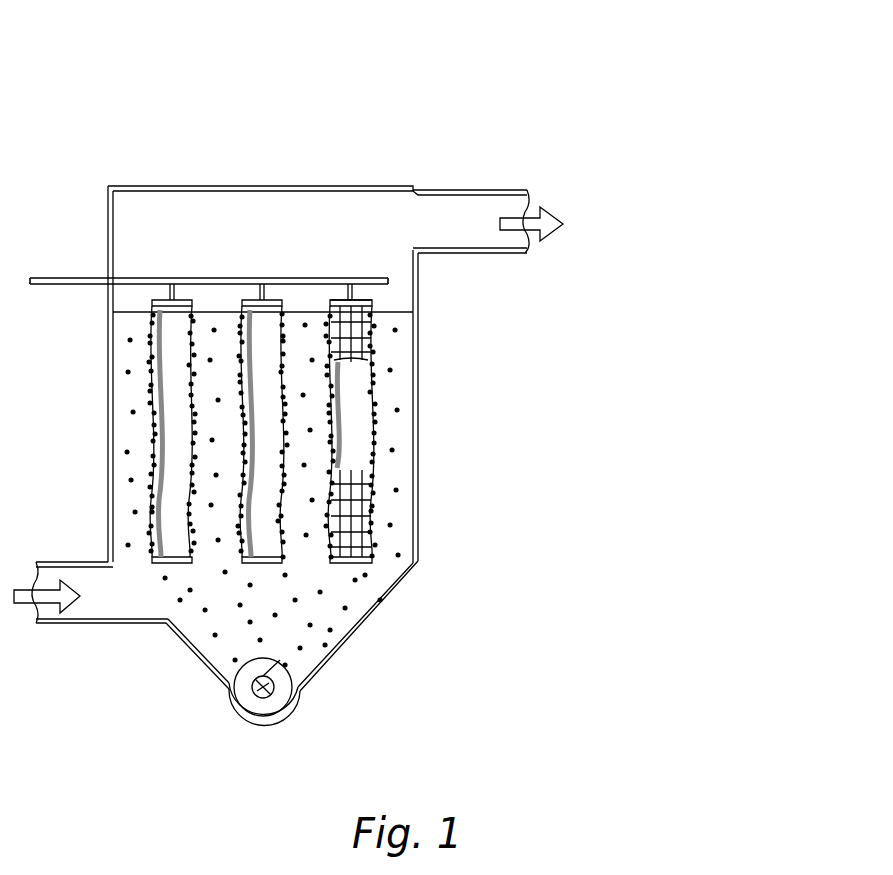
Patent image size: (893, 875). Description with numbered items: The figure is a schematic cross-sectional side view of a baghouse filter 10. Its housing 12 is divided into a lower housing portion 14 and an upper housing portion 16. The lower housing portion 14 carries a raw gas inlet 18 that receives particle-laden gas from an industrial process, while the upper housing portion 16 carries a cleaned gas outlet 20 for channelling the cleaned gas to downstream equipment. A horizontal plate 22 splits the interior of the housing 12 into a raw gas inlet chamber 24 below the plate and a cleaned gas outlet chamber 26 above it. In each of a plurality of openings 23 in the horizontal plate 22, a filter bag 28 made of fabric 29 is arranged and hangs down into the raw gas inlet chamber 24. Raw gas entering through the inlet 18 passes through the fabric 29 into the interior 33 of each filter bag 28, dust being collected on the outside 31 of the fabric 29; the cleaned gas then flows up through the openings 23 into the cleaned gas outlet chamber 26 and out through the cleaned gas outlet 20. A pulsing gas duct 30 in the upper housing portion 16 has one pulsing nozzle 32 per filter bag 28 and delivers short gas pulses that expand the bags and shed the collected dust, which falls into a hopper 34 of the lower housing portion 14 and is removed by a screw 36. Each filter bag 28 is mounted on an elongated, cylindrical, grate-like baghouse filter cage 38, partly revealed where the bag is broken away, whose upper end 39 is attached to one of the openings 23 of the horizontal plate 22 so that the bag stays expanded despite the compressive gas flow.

The baghouse filter 10 is at (429, 66).
The housing 12 is at (436, 301).
The lower housing portion 14 is at (418, 362).
The upper housing portion 16 is at (357, 187).
The raw gas inlet 18 is at (55, 624).
The cleaned gas outlet 20 is at (473, 190).
The horizontal plate 22 is at (133, 312).
The opening 23 is at (202, 297).
The raw gas inlet chamber 24 is at (317, 607).
The cleaned gas outlet chamber 26 is at (203, 210).
The filter bag 28 is at (150, 452).
The fabric 29 is at (353, 417).
The pulsing gas duct 30 is at (200, 297).
The outside of the fabric 31 is at (357, 372).
The pulsing nozzle 32 is at (364, 299).
The interior of the filter bag 33 is at (349, 474).
The hopper 34 is at (185, 647).
The screw 36 is at (268, 712).
The baghouse filter cage 38 is at (372, 555).
The upper end 39 is at (382, 298).